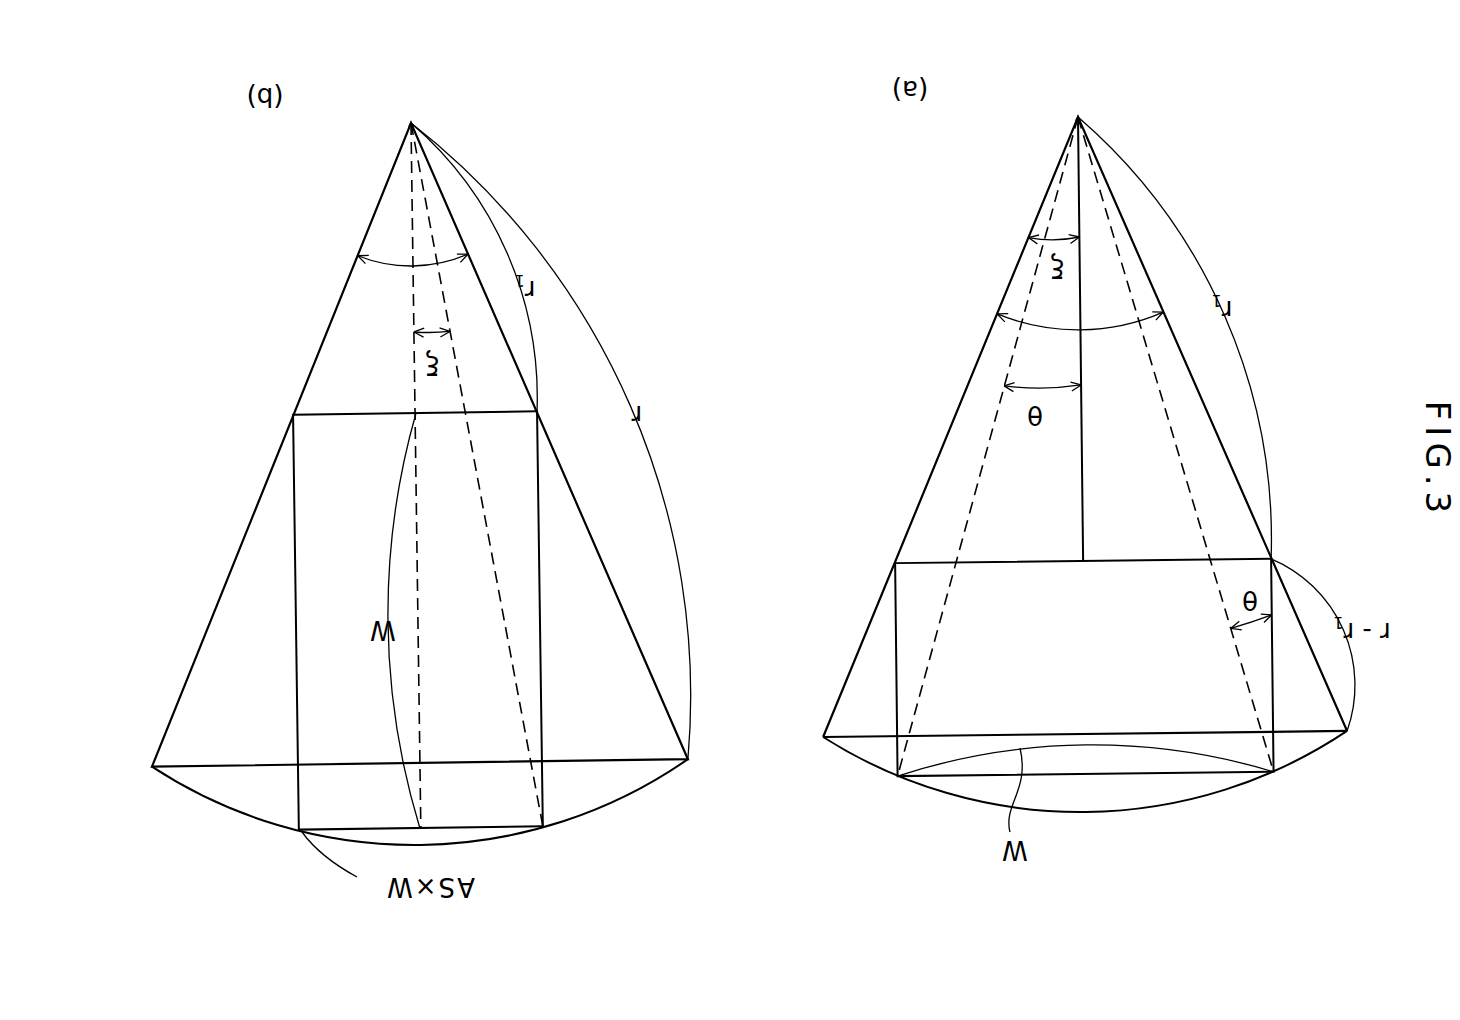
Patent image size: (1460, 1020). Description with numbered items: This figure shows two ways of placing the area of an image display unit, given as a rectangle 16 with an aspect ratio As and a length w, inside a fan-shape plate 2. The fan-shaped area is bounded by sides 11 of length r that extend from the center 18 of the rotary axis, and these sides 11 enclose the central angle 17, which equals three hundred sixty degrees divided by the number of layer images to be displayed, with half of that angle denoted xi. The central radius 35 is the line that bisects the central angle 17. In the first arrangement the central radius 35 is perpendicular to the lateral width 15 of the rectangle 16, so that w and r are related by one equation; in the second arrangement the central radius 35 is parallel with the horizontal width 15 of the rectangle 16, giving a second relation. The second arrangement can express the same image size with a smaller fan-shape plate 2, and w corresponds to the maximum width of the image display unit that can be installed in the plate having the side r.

The fan-shape plate 2 is at (873, 510).
The sides 11 is at (947, 430).
The lateral width 15 is at (1152, 780).
The rectangle 16 is at (970, 642).
The central angle 17 is at (761, 304).
The center 18 is at (739, 103).
The central radius 35 is at (425, 690).